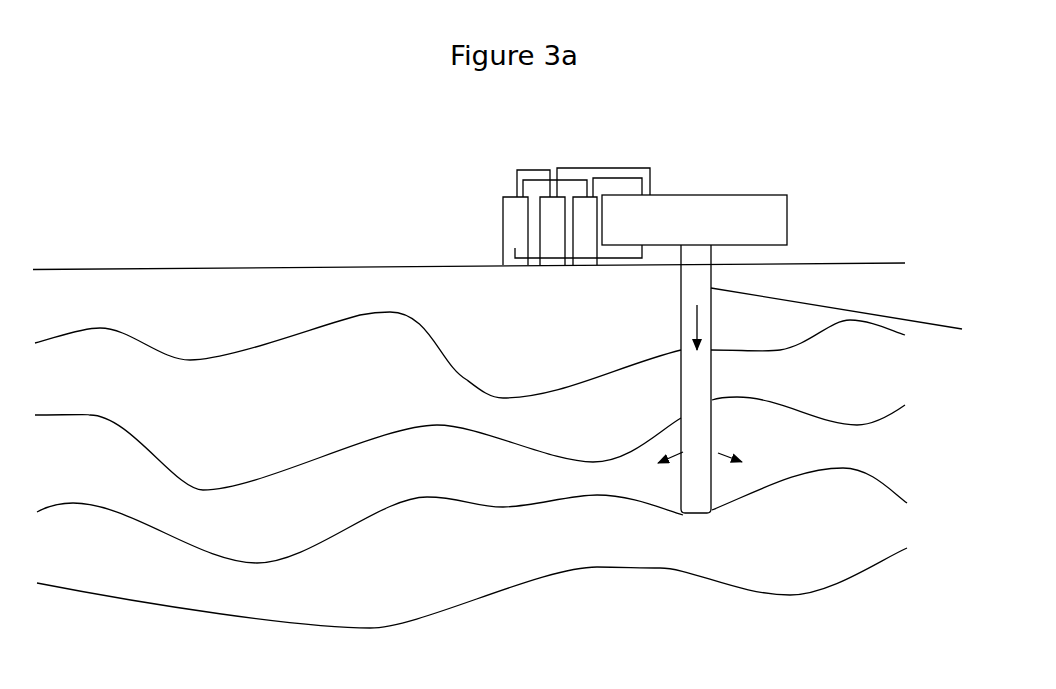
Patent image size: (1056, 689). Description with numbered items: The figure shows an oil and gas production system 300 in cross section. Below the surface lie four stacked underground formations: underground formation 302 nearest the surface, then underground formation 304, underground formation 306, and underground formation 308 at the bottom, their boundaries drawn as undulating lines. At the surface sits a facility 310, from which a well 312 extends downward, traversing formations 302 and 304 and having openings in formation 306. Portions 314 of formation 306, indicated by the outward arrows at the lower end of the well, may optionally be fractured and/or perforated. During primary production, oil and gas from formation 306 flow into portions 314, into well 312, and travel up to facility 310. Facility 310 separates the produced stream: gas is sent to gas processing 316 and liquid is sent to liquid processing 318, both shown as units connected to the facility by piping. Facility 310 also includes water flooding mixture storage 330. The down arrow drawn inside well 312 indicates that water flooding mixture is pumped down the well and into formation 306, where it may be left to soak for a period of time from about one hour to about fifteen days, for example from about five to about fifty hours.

The system 300 is at (370, 217).
The underground formation 302 is at (470, 351).
The underground formation 304 is at (470, 425).
The underground formation 306 is at (472, 495).
The underground formation 308 is at (472, 564).
The facility 310 is at (712, 230).
The well 312 is at (859, 317).
The portions 314 is at (660, 467).
The gas processing 316 is at (583, 217).
The liquid processing 318 is at (555, 217).
The water flooding mixture storage 330 is at (513, 212).